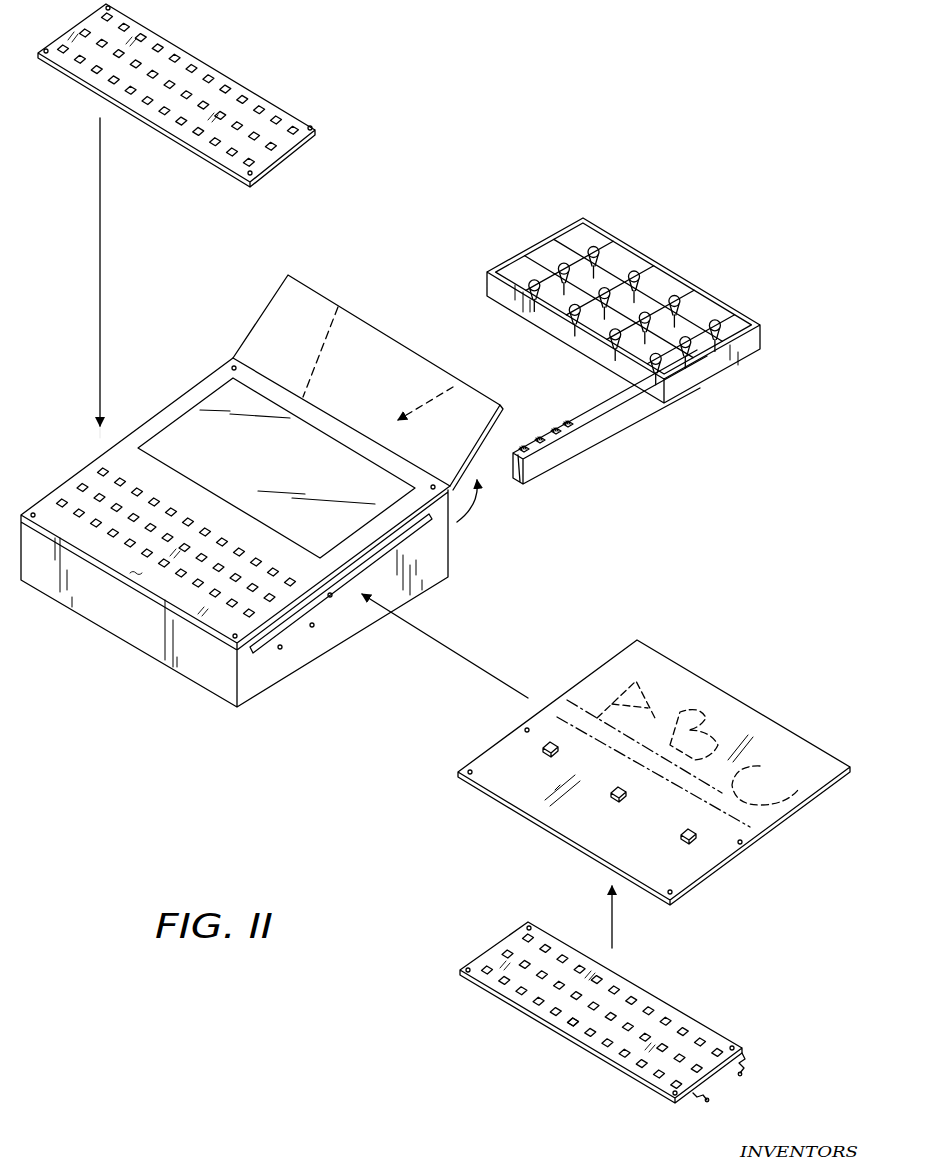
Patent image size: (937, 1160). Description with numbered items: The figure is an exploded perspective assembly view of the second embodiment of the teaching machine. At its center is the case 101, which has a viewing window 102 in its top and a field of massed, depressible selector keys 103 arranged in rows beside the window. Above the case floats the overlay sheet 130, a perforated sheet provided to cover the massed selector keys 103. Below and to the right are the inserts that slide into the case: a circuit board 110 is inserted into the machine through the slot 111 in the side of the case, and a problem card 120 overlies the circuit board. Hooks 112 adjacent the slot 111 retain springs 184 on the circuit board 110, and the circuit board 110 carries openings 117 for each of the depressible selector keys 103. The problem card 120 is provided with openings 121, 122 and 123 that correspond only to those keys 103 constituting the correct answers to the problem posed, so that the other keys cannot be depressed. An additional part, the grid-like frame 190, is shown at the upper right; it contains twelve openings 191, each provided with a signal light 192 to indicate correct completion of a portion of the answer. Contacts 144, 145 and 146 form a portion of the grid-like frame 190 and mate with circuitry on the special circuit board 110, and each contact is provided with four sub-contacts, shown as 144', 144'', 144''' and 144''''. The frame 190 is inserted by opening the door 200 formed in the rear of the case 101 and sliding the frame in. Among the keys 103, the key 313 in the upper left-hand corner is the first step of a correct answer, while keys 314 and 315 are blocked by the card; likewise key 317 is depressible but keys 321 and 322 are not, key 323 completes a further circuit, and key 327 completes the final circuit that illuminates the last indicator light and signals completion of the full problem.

The case 101 is at (251, 707).
The viewing window 102 is at (218, 397).
The depressible selector keys 103 is at (217, 598).
The circuit board 110 is at (497, 995).
The slot 111 is at (330, 597).
The hooks 112 is at (312, 627).
The openings 117 is at (595, 1052).
The problem card 120 is at (647, 772).
The opening 121 is at (543, 748).
The opening 122 is at (614, 800).
The opening 123 is at (683, 839).
The overlay sheet 130 is at (230, 75).
The contact 144 is at (610, 435).
The sub-contact 144' is at (529, 431).
The sub-contact 144'' is at (535, 415).
The sub-contact 144''' is at (562, 401).
The sub-contact 144'''' is at (593, 407).
The contact 145 is at (547, 452).
The contact 146 is at (517, 482).
The springs 184 is at (743, 1072).
The grid-like frame 190 is at (623, 300).
The openings 191 is at (633, 262).
The signal light 192 is at (682, 300).
The door 200 is at (347, 320).
The selector key 313 is at (103, 470).
The selector key 314 is at (122, 480).
The selector key 315 is at (140, 491).
The selector key 317 is at (173, 512).
The selector key 321 is at (157, 502).
The selector key 322 is at (191, 522).
The selector key 323 is at (248, 551).
The selector key 327 is at (294, 585).